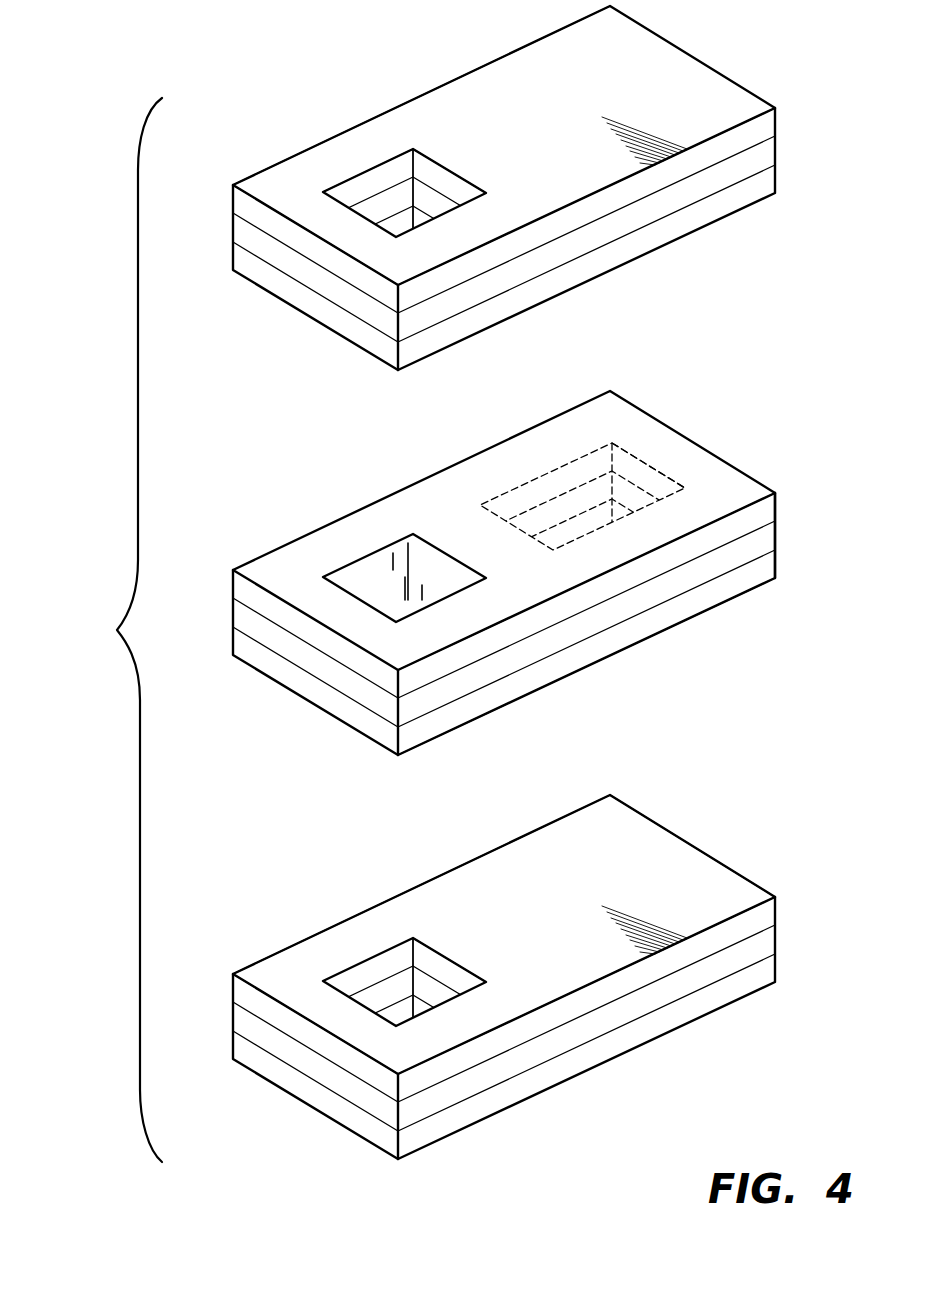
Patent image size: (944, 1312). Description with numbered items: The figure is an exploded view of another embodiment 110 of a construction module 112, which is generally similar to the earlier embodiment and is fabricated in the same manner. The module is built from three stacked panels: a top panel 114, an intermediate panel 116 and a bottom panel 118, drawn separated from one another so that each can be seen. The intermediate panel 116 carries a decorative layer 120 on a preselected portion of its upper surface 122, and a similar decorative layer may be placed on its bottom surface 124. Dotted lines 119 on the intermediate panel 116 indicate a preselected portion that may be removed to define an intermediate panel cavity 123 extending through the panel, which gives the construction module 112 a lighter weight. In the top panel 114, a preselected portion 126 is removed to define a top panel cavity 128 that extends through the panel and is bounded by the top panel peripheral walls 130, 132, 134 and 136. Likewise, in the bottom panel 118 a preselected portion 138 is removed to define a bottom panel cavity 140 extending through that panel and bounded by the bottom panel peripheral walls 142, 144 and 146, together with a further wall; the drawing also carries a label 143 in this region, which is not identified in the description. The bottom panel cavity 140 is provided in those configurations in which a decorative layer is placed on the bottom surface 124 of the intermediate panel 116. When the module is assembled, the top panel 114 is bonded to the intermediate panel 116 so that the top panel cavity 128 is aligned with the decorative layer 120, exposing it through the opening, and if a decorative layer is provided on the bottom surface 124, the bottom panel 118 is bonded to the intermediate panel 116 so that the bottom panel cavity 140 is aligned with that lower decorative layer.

The embodiment 110 is at (800, 545).
The construction module 112 is at (110, 630).
The top panel 114 is at (703, 63).
The intermediate panel 116 is at (693, 445).
The bottom panel 118 is at (701, 853).
The dotted lines 119 is at (627, 452).
The decorative layer 120 is at (367, 570).
The upper surface 122 is at (528, 582).
The intermediate panel cavity 123 is at (580, 527).
The bottom surface 124 is at (543, 688).
The preselected portion 126 is at (398, 222).
The top panel cavity 128 is at (448, 208).
The top panel peripheral wall 130 is at (338, 222).
The top panel peripheral wall 132 is at (330, 167).
The top panel peripheral wall 134 is at (475, 153).
The top panel peripheral wall 136 is at (457, 238).
The preselected portion 138 is at (393, 1013).
The bottom panel cavity 140 is at (412, 1017).
The bottom panel peripheral wall 142 is at (343, 1020).
The top surface region of bottom layer 143 is at (458, 1020).
The bottom panel peripheral wall 144 is at (345, 953).
The bottom panel peripheral wall 146 is at (485, 940).